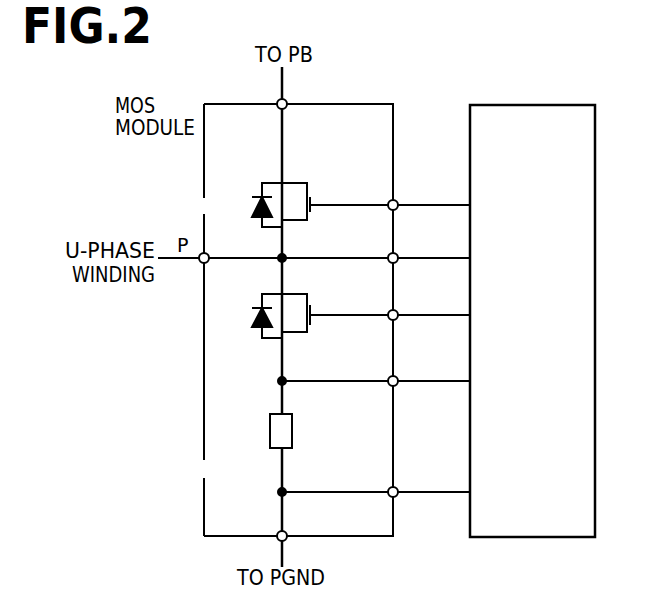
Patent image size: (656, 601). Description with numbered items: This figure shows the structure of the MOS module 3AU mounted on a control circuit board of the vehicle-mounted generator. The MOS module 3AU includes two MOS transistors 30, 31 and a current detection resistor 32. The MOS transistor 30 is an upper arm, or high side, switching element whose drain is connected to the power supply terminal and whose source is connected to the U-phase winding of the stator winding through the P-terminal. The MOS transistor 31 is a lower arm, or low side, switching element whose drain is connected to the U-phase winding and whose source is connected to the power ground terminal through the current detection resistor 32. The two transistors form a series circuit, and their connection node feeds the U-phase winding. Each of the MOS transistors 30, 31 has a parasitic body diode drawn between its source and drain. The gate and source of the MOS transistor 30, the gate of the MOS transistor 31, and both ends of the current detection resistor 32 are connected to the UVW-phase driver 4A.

The MOS module 3AU is at (383, 104).
The UVW-phase driver 4A is at (520, 105).
The MOS transistor 30 is at (263, 183).
The MOS transistor 31 is at (263, 338).
The current detection resistor 32 is at (271, 448).